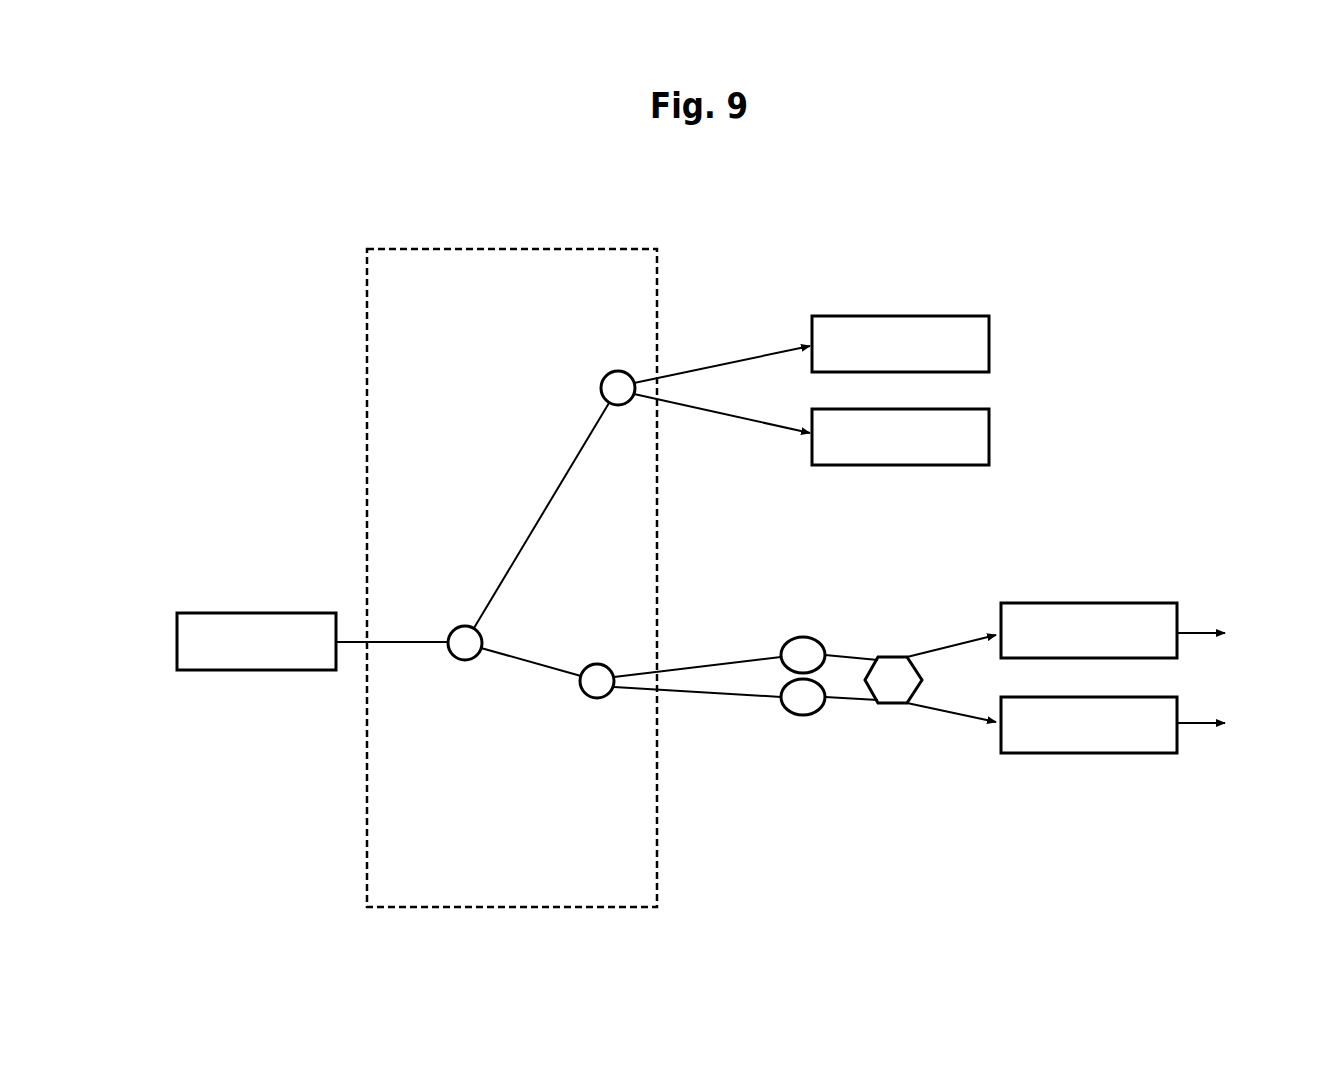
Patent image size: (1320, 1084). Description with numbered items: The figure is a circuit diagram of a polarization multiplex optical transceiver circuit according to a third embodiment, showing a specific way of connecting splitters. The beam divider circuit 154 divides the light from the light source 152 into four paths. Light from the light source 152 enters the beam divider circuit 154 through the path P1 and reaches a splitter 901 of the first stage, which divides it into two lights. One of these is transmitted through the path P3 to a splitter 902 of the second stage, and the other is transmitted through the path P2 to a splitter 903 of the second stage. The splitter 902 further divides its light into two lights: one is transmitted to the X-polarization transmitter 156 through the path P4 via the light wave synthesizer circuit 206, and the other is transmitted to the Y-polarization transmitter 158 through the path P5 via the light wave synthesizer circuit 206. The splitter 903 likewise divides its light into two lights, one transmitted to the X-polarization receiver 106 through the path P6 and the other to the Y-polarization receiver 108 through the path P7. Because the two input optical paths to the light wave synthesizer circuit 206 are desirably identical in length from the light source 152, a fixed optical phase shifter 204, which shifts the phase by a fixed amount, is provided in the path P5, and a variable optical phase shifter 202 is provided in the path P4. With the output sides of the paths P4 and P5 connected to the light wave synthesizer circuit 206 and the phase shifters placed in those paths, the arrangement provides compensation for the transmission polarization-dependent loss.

The light source 152 is at (237, 665).
The beam divider circuit 154 is at (590, 248).
The splitter of the first stage 901 is at (463, 662).
The splitter of the second stage 902 is at (595, 700).
The splitter of the second stage 903 is at (608, 373).
The path P1 is at (415, 640).
The path P2 is at (540, 510).
The path P3 is at (537, 668).
The path P4 is at (717, 662).
The path P5 is at (692, 697).
The path P6 is at (716, 358).
The path P7 is at (699, 410).
The X-polarization receiver 106 is at (910, 315).
The Y-polarization receiver 108 is at (952, 466).
The X-polarization transmitter 156 is at (1095, 603).
The Y-polarization transmitter 158 is at (1085, 755).
The variable optical phase shifter 202 is at (808, 637).
The fixed optical phase shifter 204 is at (795, 716).
The light wave synthesizer circuit 206 is at (890, 706).